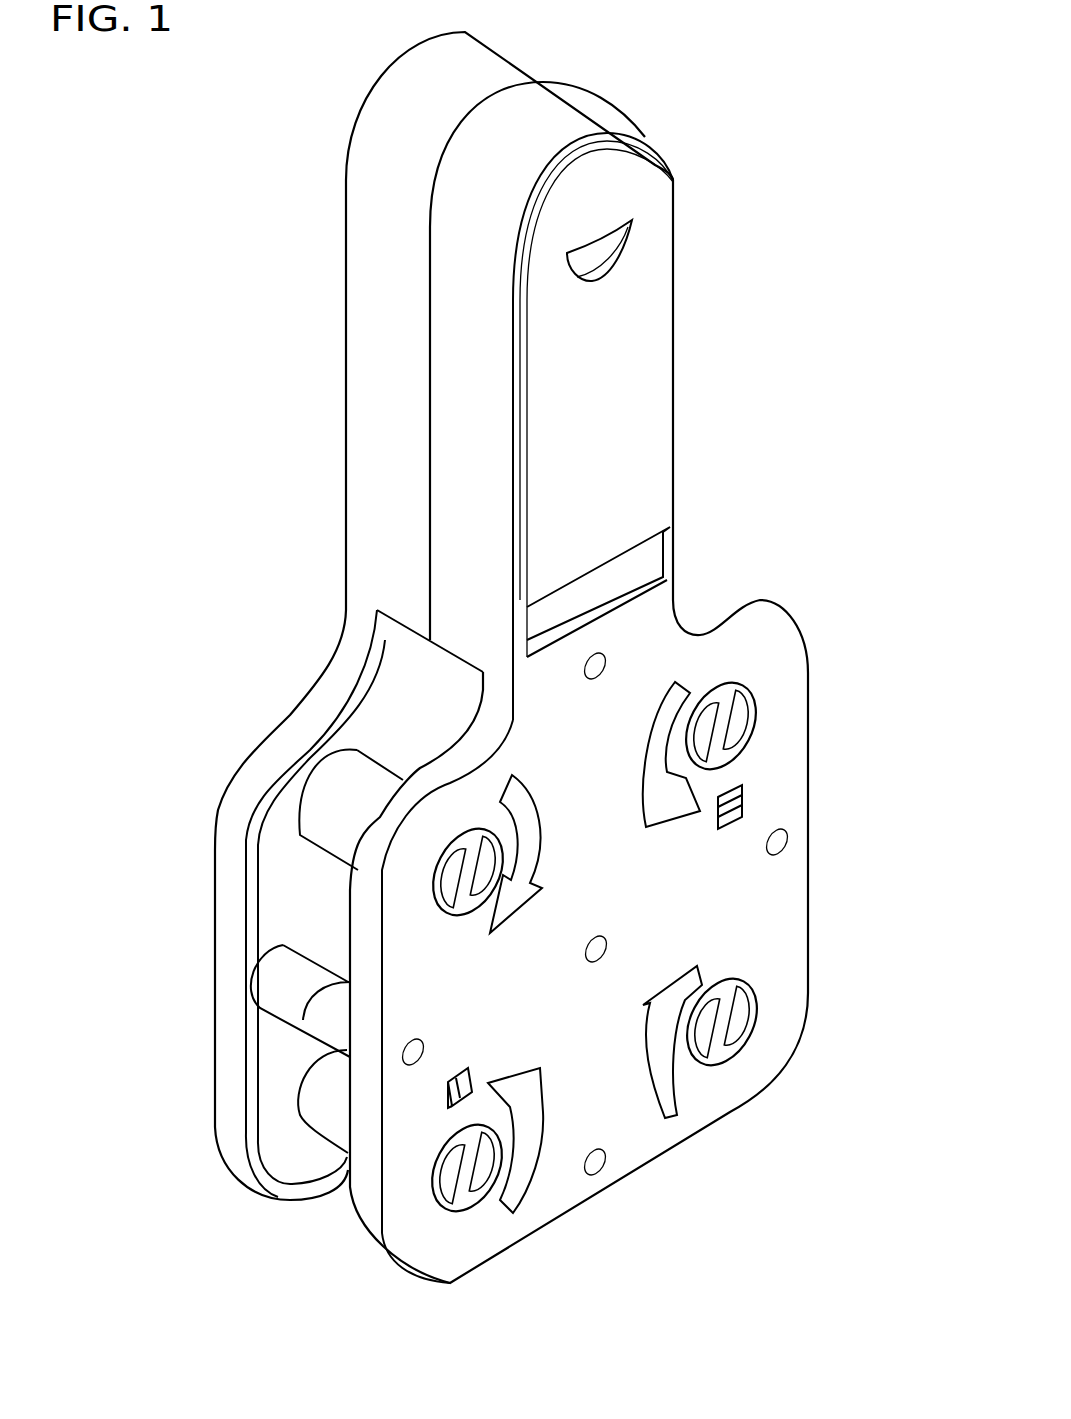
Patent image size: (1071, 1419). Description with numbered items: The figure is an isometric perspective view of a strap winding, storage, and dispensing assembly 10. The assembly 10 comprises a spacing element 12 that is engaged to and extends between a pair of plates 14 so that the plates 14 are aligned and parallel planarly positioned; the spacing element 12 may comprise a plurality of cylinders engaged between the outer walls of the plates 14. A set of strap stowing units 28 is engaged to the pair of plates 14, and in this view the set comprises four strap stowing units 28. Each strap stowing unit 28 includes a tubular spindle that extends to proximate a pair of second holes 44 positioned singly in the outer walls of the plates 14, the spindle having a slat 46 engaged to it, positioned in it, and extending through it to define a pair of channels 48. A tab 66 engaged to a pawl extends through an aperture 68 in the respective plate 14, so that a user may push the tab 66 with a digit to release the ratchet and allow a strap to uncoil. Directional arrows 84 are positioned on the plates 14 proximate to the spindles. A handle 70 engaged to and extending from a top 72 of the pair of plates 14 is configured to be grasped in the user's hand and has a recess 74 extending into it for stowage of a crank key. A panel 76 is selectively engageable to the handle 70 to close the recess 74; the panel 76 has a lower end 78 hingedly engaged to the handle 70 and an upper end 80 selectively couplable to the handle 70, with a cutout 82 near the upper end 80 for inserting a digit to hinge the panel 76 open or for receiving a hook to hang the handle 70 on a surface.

The strap winding, storage, and dispensing assembly 10 is at (812, 135).
The spacing element 12 is at (270, 1000).
The plate 14 is at (460, 765).
The strap stowing unit 28 is at (330, 1087).
The second hole 44 is at (447, 1190).
The slat 46 is at (720, 1018).
The channel 48 is at (737, 1040).
The tab 66 is at (752, 783).
The aperture 68 is at (735, 805).
The handle 70 is at (477, 62).
The top 72 is at (720, 611).
The recess 74 is at (622, 387).
The panel 76 is at (618, 333).
The lower end 78 is at (620, 547).
The upper end 80 is at (612, 152).
The cutout 82 is at (598, 252).
The directional arrow 84 is at (686, 828).